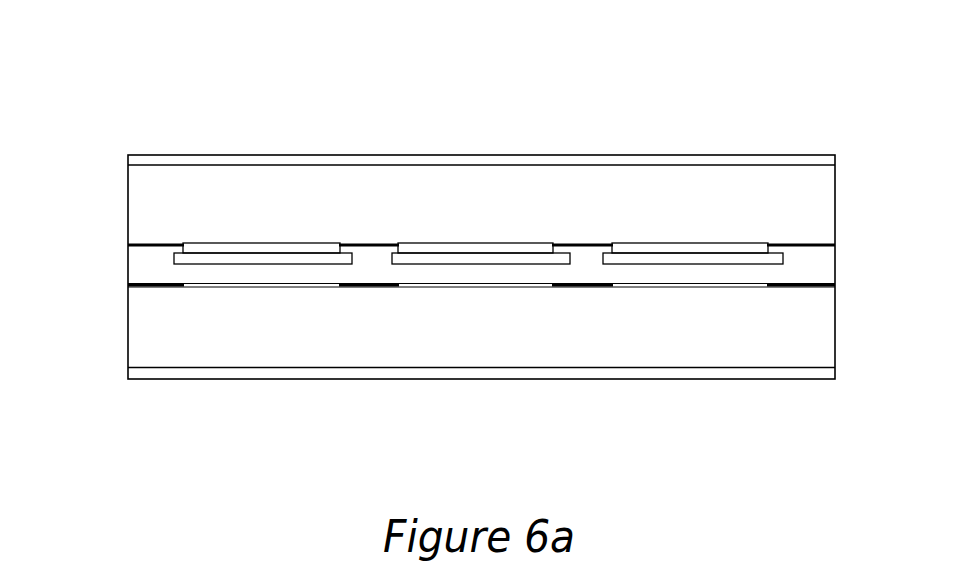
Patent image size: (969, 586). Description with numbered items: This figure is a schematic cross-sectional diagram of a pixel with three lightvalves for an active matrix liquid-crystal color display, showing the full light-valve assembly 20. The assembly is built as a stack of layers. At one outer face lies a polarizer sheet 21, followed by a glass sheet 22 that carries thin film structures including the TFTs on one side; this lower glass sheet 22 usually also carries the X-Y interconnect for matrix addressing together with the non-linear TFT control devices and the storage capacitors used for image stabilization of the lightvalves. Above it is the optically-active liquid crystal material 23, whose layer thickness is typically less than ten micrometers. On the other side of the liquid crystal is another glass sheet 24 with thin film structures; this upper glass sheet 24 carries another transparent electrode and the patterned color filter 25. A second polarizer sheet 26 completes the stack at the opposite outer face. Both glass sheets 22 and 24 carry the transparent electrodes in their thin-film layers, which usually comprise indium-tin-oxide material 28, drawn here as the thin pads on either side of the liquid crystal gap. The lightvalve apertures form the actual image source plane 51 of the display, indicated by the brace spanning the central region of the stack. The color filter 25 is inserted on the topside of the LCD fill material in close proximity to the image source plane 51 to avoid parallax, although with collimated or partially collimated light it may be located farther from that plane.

The light-valve assembly 20 is at (826, 99).
The polarizer sheet 21 is at (738, 377).
The glass sheet 22 is at (197, 322).
The optically-active liquid crystal material 23 is at (370, 258).
The glass sheet 24 is at (215, 208).
The color filter 25 is at (485, 248).
The polarizer sheet 26 is at (303, 158).
The indium-tin-oxide material 28 is at (430, 258).
The image source plane 51 is at (454, 270).